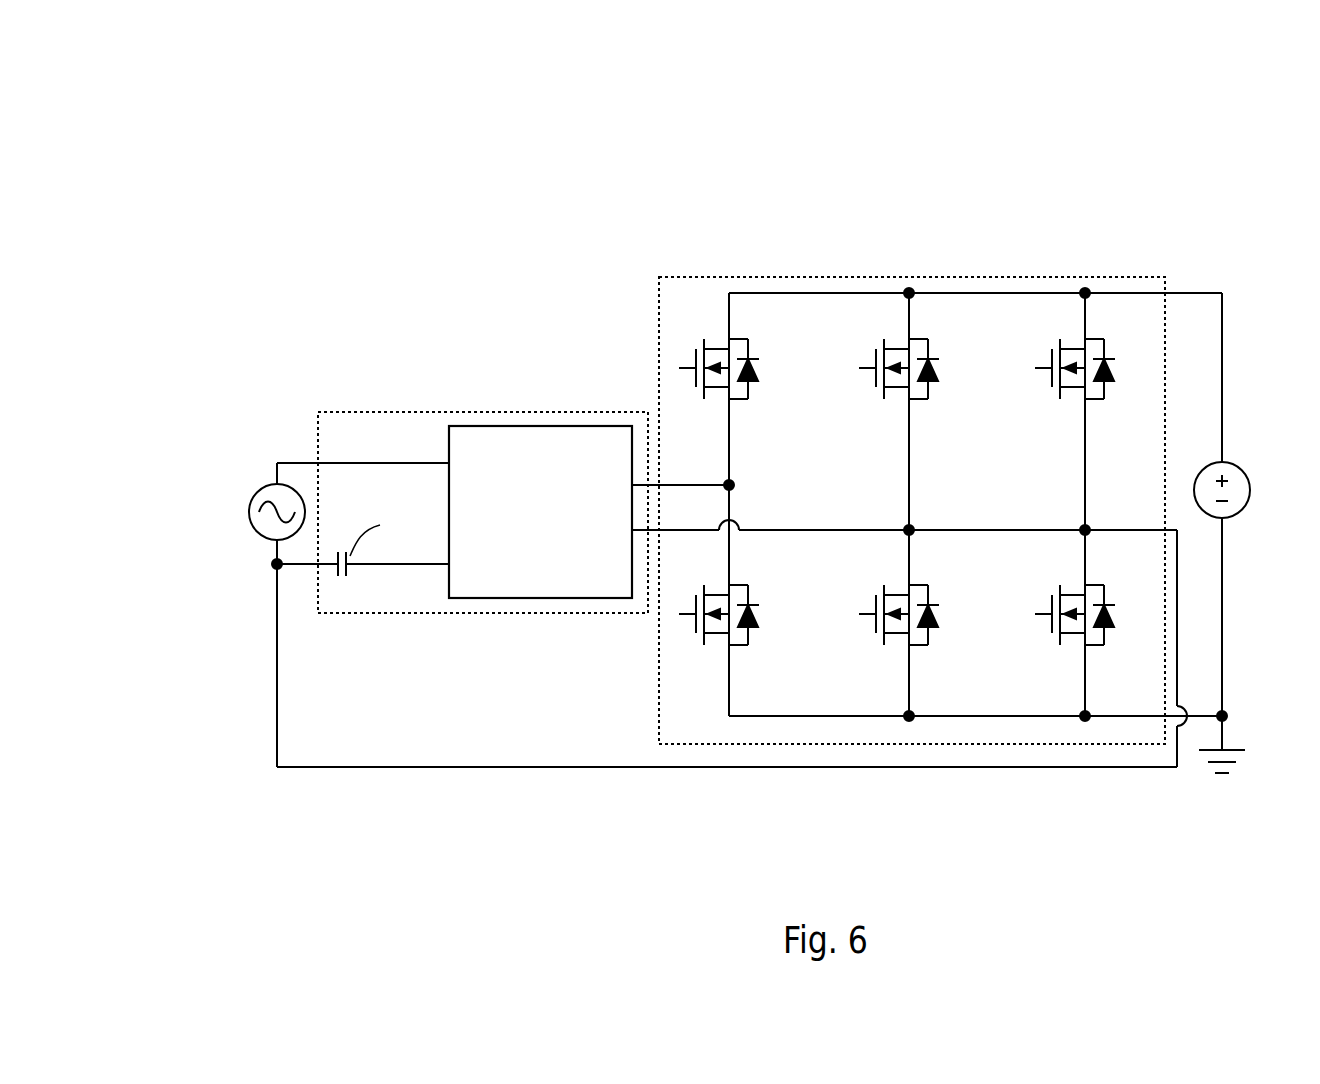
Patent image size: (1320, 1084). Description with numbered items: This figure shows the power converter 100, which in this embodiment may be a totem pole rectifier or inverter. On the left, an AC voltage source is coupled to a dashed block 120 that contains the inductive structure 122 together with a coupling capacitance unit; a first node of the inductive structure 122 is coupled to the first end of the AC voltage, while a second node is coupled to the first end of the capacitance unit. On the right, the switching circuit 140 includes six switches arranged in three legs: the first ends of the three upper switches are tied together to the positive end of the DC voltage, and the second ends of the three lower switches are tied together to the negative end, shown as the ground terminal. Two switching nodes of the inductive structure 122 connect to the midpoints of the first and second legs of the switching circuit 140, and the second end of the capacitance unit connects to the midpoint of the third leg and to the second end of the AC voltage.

The power converter 100 is at (142, 66).
The capacitive coupling / input circuit 120 is at (433, 412).
The inductive structure 122 is at (562, 426).
The switching circuit 140 is at (921, 277).